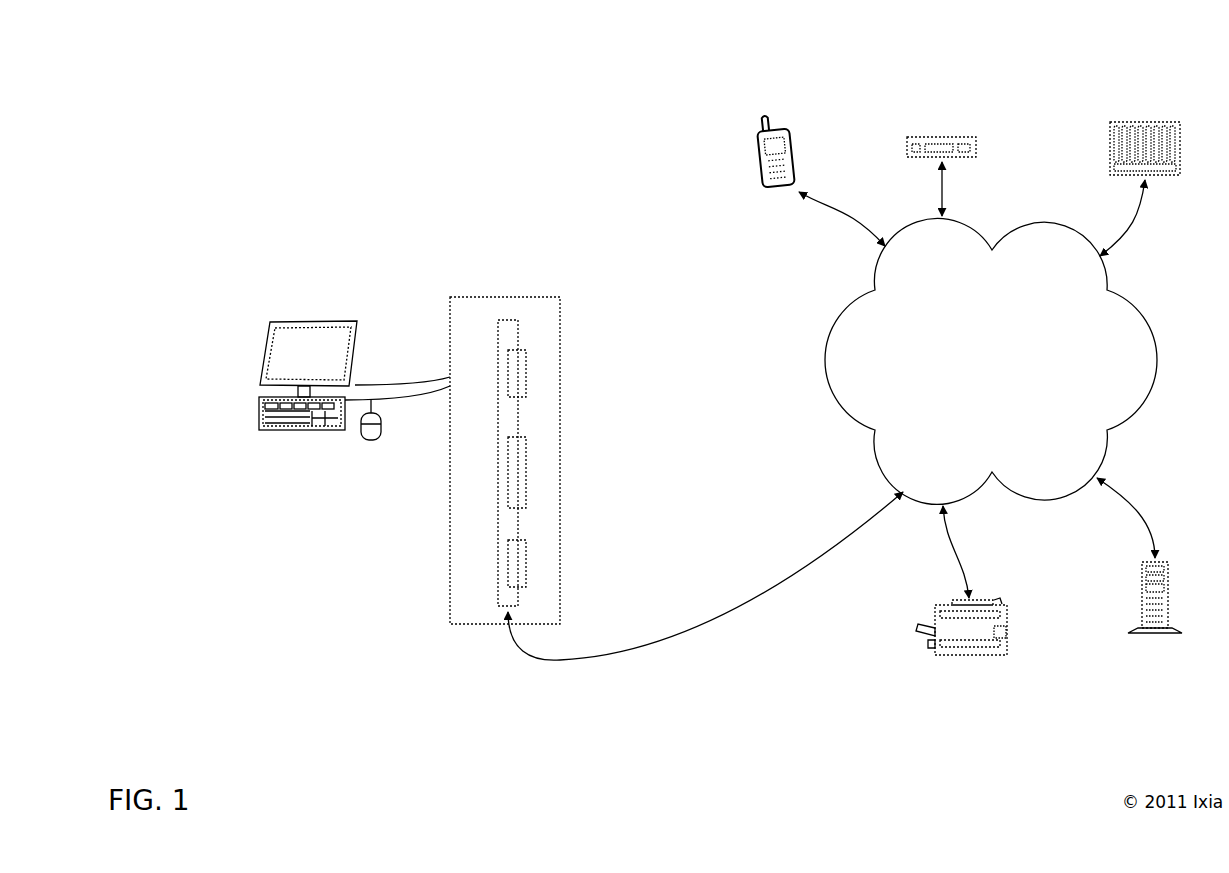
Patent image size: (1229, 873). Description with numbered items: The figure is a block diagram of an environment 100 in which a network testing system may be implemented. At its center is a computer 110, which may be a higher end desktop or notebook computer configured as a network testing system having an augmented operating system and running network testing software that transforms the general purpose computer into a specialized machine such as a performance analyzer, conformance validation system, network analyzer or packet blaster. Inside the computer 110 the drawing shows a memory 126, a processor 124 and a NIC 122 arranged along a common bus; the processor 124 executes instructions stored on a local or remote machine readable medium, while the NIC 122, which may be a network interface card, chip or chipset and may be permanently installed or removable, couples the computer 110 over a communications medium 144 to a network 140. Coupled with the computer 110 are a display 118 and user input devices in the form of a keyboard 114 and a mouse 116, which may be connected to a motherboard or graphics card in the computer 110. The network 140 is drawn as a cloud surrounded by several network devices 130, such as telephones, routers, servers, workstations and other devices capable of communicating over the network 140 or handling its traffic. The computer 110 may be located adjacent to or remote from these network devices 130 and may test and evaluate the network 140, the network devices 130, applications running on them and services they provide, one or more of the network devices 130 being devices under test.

The environment 100 is at (303, 73).
The computer 110 is at (468, 297).
The keyboard 114 is at (262, 413).
The mouse 116 is at (371, 440).
The display 118 is at (262, 360).
The NIC 122 is at (526, 564).
The processor 124 is at (526, 471).
The memory 126 is at (526, 373).
The network devices 130 is at (966, 388).
The network 140 is at (991, 361).
The communications medium 144 is at (580, 660).